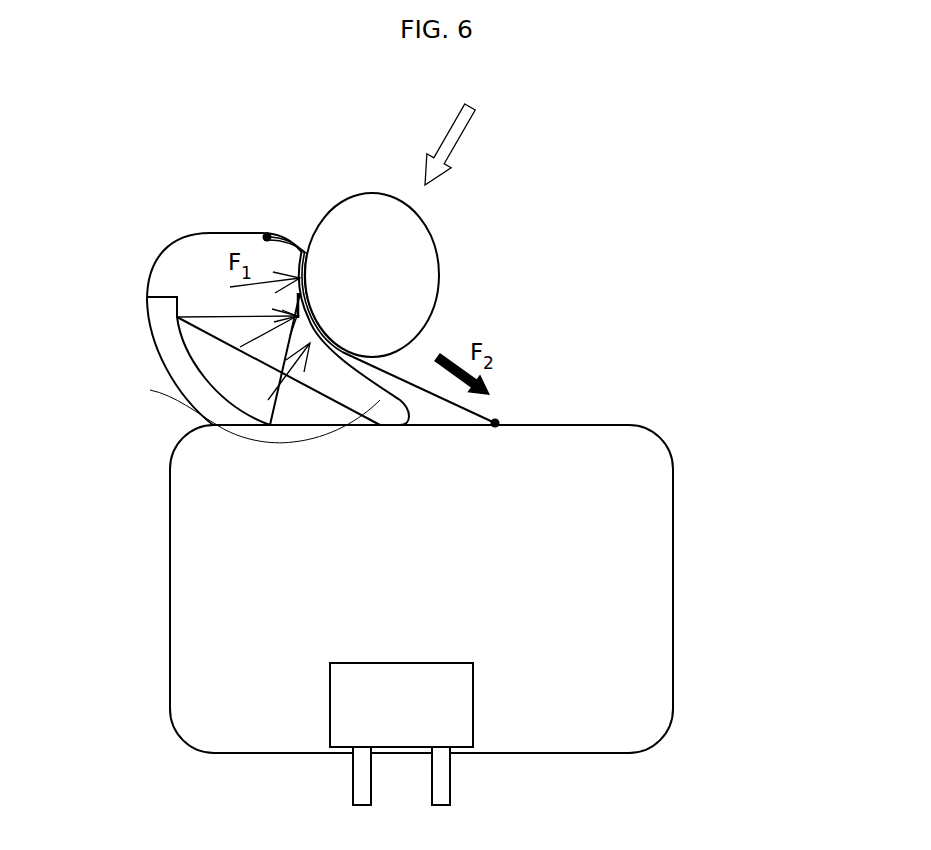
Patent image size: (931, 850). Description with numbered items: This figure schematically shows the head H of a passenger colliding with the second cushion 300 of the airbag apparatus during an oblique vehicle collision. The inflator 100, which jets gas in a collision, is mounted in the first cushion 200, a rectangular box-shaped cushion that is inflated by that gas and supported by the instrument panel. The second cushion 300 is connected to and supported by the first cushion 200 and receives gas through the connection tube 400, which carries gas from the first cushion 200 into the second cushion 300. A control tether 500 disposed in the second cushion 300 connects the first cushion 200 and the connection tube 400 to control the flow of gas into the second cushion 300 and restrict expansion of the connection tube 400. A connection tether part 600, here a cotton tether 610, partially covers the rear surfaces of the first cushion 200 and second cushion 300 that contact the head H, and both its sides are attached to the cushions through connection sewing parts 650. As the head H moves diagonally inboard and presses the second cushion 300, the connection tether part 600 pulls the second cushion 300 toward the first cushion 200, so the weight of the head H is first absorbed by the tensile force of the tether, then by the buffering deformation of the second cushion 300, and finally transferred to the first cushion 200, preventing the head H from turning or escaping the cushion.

The inflator 100 is at (455, 725).
The first cushion 200 is at (682, 496).
The second cushion 300 is at (160, 248).
The connection tube 400 is at (192, 392).
The control tether 500 is at (197, 345).
The connection tether part 600 is at (424, 362).
The cotton tether 610 is at (487, 413).
The connection sewing part 650 is at (267, 237).
The head H is at (373, 192).